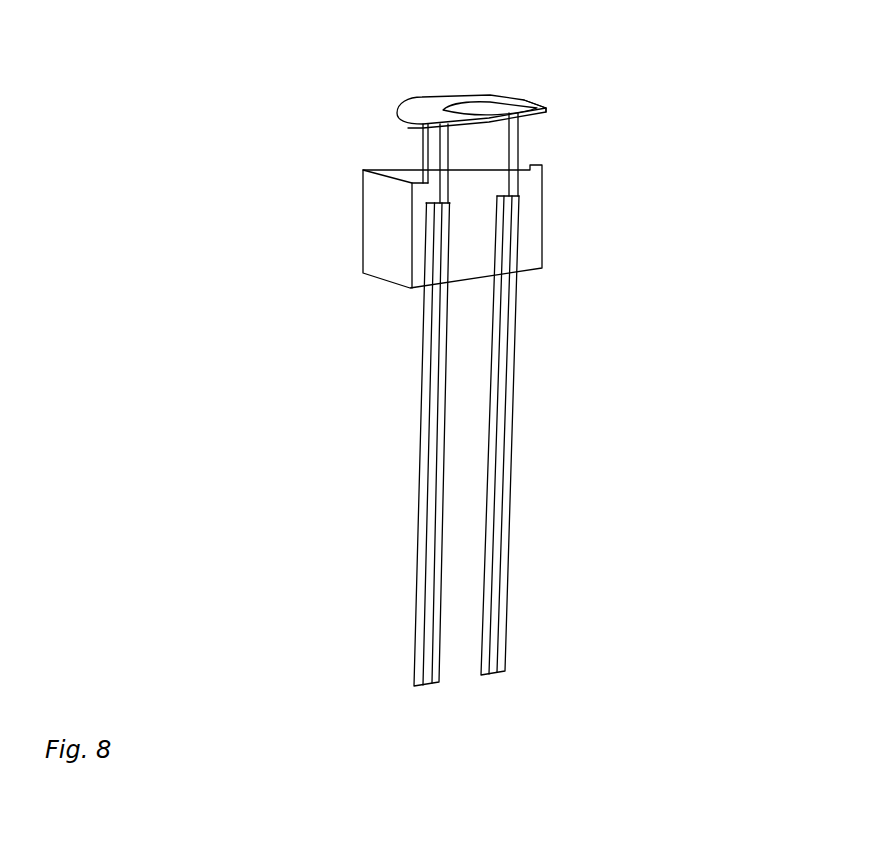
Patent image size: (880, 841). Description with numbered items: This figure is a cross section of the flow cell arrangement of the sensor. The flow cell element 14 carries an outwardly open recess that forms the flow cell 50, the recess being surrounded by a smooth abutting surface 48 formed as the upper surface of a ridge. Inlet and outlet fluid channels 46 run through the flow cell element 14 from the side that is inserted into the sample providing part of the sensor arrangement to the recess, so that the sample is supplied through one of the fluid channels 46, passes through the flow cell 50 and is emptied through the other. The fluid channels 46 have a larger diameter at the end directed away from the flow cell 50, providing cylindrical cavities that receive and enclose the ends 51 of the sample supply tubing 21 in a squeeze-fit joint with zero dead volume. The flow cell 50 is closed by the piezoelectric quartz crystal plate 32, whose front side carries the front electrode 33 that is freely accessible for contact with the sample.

The flow cell element 14 is at (388, 262).
The sample supply tubing 21 is at (427, 505).
The piezoelectric quartz crystal plate 32 is at (420, 103).
The front electrode 33 is at (478, 103).
The inlet and outlet fluid channels 46 is at (445, 150).
The abutting surface 48 is at (532, 117).
The flow cell 50 is at (478, 118).
The ends of the sample supply tubing 51 is at (520, 234).